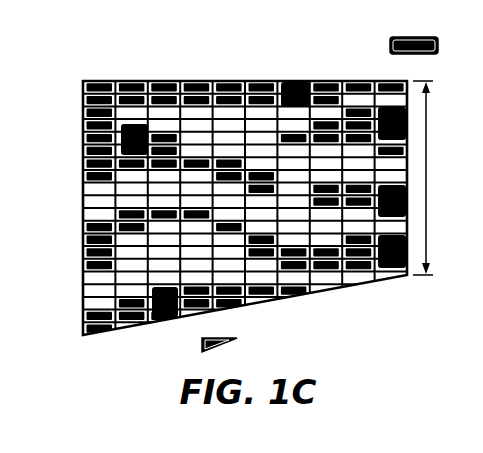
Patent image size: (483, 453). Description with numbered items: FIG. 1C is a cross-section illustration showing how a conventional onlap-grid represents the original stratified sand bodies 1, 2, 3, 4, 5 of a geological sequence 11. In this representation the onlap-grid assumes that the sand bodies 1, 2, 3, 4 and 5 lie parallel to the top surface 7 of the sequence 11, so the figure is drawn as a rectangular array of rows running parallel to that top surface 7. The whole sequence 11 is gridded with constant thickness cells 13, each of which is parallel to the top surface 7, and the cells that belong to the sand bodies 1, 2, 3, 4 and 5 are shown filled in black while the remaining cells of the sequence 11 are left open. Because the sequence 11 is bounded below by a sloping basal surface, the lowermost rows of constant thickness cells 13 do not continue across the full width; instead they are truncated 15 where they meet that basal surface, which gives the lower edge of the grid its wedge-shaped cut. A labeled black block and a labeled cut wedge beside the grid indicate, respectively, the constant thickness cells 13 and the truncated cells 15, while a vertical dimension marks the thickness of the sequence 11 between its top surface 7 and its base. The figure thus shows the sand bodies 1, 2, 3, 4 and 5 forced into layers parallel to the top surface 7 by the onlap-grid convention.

The top surface 7 is at (164, 81).
The sequence 11 is at (428, 150).
The constant thickness cells 13 is at (393, 82).
The truncated cells 15 is at (223, 335).
The sand body 1 is at (290, 104).
The sand body 2 is at (129, 150).
The sand body 3 is at (386, 212).
The sand body 4 is at (386, 262).
The sand body 5 is at (159, 312).